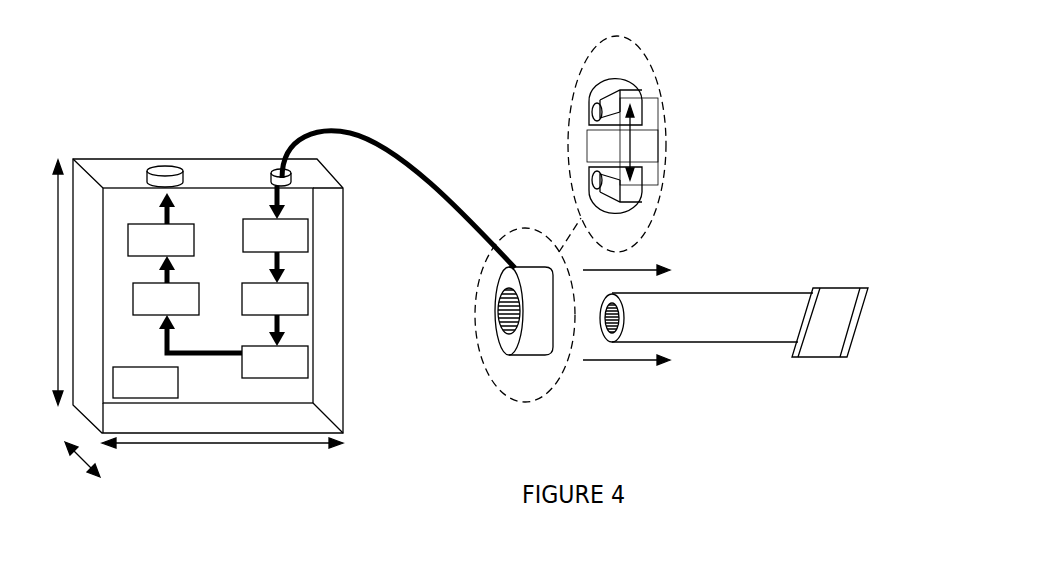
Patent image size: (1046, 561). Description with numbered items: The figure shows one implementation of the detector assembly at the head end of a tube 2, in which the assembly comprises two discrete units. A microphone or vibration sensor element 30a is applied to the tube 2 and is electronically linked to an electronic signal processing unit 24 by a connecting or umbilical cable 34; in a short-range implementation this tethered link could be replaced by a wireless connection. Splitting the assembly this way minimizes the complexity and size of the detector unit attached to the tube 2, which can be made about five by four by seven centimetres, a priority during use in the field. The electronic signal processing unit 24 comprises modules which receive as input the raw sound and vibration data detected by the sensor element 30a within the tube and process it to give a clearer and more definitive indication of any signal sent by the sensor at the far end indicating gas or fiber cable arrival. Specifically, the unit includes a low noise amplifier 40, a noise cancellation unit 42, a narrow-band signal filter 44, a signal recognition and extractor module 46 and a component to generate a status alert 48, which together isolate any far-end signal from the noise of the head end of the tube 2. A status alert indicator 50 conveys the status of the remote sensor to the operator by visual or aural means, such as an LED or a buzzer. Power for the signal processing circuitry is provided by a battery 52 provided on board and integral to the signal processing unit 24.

The tube 2 is at (732, 293).
The electronic signal processing unit 24 is at (212, 142).
The microphone or vibration sensor element 30a is at (530, 350).
The connecting cable 34 is at (395, 148).
The low noise amplifier 40 is at (275, 235).
The noise cancellation unit 42 is at (275, 299).
The narrow-band signal filter 44 is at (275, 362).
The signal recognition and extractor module 46 is at (166, 299).
The status alert component 48 is at (161, 240).
The status alert indicator 50 is at (167, 170).
The battery 52 is at (145, 382).